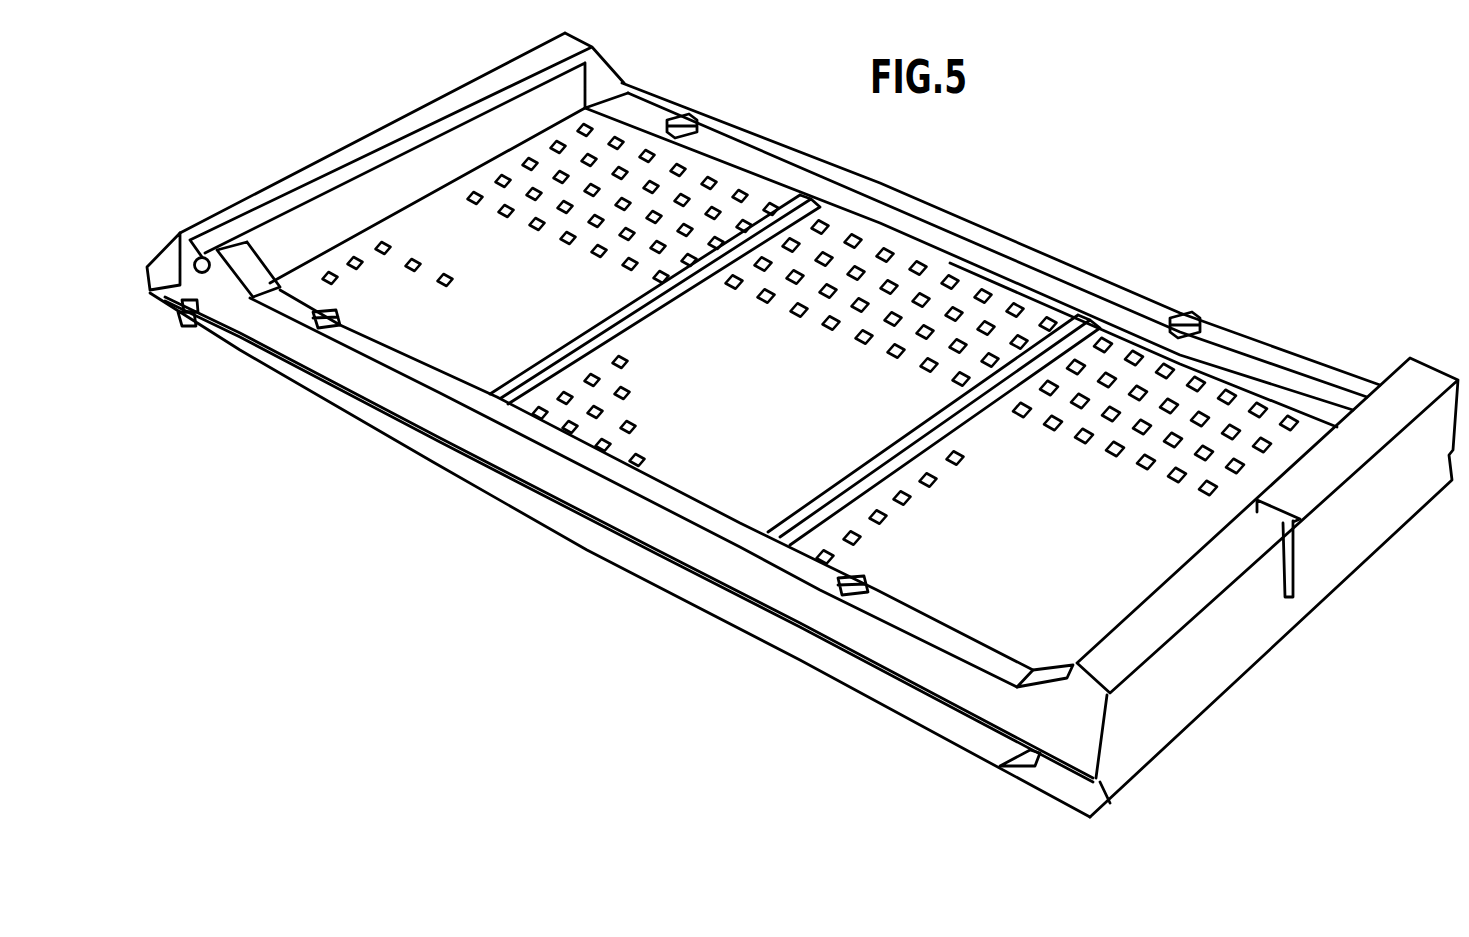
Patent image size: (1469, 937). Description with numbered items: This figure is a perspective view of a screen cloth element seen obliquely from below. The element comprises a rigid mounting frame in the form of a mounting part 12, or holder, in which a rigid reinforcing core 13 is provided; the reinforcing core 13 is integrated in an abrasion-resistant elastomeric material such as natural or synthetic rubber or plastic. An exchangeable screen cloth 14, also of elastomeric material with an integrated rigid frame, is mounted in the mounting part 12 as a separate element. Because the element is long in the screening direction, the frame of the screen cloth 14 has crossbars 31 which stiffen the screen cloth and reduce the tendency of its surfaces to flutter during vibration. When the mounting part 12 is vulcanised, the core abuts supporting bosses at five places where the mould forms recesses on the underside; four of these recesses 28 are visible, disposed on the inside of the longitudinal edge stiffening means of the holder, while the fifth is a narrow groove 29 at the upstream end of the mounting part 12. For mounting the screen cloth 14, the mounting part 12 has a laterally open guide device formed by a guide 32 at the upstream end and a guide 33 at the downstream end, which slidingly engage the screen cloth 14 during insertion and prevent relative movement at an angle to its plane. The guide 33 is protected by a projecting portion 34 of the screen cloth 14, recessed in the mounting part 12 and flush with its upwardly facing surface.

The mounting part 12 is at (962, 206).
The reinforcing core 13 is at (320, 327).
The screen cloth 14 is at (527, 508).
The recesses 28 is at (686, 118).
The narrow groove 29 is at (1260, 519).
The crossbars 31 is at (613, 318).
The guide 32 is at (1020, 778).
The guide 33 is at (177, 310).
The projecting portion 34 is at (189, 312).